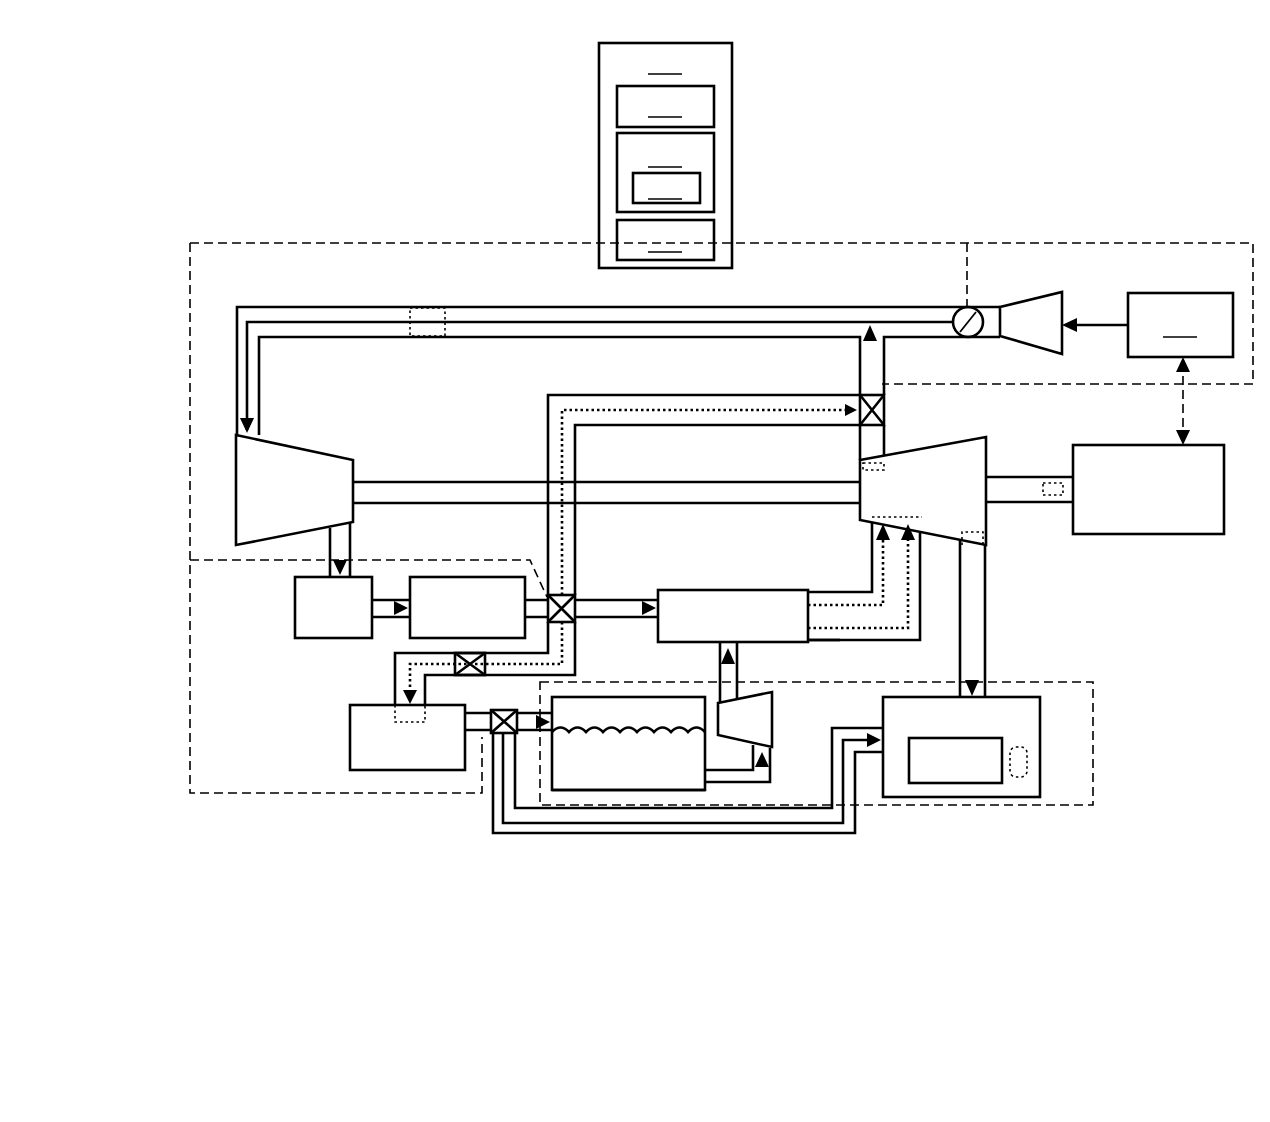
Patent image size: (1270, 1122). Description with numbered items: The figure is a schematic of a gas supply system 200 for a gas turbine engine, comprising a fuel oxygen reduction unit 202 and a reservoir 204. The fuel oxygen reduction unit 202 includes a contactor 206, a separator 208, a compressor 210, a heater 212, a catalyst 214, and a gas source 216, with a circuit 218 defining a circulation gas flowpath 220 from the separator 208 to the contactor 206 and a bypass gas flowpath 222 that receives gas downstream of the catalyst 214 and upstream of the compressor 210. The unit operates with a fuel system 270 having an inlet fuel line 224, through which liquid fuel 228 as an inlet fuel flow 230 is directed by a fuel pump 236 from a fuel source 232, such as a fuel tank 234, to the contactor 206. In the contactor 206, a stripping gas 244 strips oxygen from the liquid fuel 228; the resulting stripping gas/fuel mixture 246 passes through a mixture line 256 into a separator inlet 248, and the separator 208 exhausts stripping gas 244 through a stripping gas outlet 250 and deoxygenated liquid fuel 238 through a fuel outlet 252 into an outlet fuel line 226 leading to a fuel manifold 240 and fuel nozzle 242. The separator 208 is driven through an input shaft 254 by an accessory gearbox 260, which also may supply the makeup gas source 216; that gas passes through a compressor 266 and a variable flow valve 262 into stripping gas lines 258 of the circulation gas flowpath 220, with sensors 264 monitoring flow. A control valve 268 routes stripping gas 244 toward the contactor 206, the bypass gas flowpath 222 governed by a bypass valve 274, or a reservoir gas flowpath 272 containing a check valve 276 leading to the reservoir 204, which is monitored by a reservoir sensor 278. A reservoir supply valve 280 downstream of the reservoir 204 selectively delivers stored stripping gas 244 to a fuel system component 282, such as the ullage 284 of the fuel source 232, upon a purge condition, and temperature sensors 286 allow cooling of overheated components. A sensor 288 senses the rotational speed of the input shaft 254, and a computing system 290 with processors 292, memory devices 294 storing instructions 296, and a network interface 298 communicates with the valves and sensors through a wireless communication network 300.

The gas supply system 200 is at (318, 190).
The fuel oxygen reduction unit 202 is at (435, 228).
The reservoir 204 is at (423, 772).
The contactor 206 is at (785, 590).
The separator 208 is at (990, 505).
The compressor 210 is at (318, 448).
The heater 212 is at (298, 625).
The catalyst 214 is at (460, 575).
The gas source 216 is at (1180, 369).
The circuit 218 is at (310, 305).
The circulation gas flowpath 220 is at (520, 318).
The bypass gas flowpath 222 is at (713, 392).
The inlet fuel line 224 is at (741, 667).
The outlet fuel line 226 is at (988, 607).
The liquid fuel 228 is at (578, 785).
The inlet fuel flow 230 is at (770, 768).
The fuel source 232 is at (680, 797).
The fuel tank 234 is at (650, 790).
The fuel pump 236 is at (774, 700).
The deoxygenated liquid fuel 238 is at (967, 648).
The fuel manifold 240 is at (1042, 722).
The fuel nozzle 242 is at (982, 785).
The stripping gas 244 is at (882, 440).
The stripping gas/fuel mixture 246 is at (862, 640).
The separator inlet 248 is at (920, 528).
The stripping gas outlet 250 is at (893, 462).
The fuel outlet 252 is at (988, 545).
The input shaft 254 is at (438, 480).
The mixture line 256 is at (840, 648).
The stripping gas lines 258 is at (755, 305).
The accessory gearbox 260 is at (1225, 495).
The variable flow valve 262 is at (975, 312).
The sensors 264 is at (412, 310).
The compressor 266 is at (1045, 295).
The control valve 268 is at (575, 598).
The fuel system 270 is at (1080, 682).
The reservoir gas flowpath 272 is at (393, 684).
The bypass valve 274 is at (886, 408).
The check valve 276 is at (468, 678).
The reservoir sensor 278 is at (393, 712).
The reservoir supply valve 280 is at (502, 738).
The fuel system component 282 is at (815, 787).
The ullage 284 is at (580, 700).
The temperature sensors 286 is at (1028, 760).
The sensor 288 is at (1053, 483).
The computing system 290 is at (665, 155).
The processors 292 is at (665, 106).
The memory devices 294 is at (665, 172).
The instructions 296 is at (666, 188).
The network interface 298 is at (665, 240).
The wireless communication network 300 is at (850, 240).